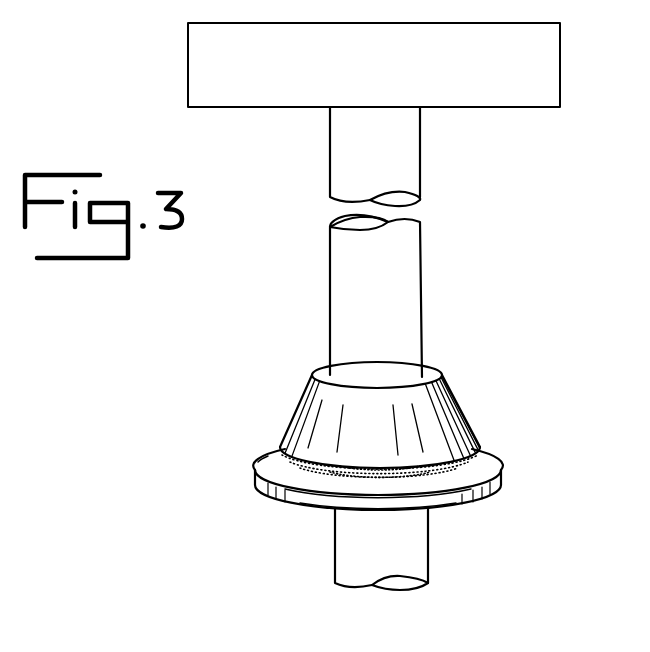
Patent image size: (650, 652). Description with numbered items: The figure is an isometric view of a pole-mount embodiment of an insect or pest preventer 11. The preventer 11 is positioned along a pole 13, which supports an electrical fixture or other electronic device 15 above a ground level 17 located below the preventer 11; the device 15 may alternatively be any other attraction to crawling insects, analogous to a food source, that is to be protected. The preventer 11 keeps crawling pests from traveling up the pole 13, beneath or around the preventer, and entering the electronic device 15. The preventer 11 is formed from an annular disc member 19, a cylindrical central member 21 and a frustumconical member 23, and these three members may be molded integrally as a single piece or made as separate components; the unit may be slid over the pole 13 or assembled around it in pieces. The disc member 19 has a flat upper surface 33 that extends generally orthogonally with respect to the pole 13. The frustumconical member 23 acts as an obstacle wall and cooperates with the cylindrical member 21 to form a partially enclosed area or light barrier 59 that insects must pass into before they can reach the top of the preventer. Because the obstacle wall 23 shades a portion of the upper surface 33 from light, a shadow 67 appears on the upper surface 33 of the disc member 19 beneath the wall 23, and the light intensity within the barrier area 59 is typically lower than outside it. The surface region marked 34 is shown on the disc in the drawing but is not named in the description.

The pest preventer 11 is at (478, 402).
The pole 13 is at (352, 268).
The electronic device 15 is at (278, 87).
The ground level 17 is at (275, 600).
The annular disc member 19 is at (483, 490).
The cylindrical central member 21 is at (450, 496).
The frustumconical member 23 is at (432, 392).
The upper surface 33 is at (268, 462).
The flange top surface 34 is at (335, 474).
The light barrier 59 is at (347, 486).
The shadow 67 is at (487, 464).